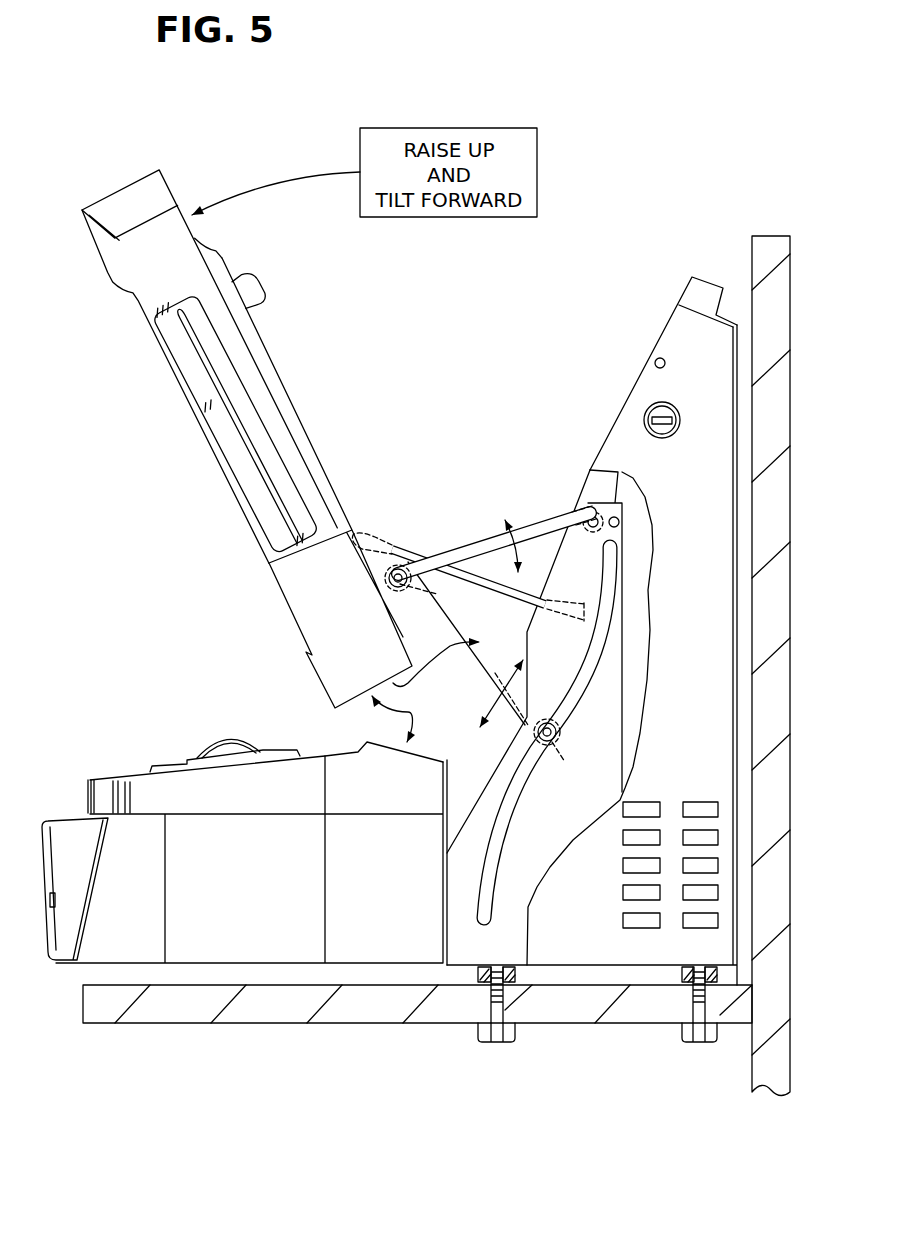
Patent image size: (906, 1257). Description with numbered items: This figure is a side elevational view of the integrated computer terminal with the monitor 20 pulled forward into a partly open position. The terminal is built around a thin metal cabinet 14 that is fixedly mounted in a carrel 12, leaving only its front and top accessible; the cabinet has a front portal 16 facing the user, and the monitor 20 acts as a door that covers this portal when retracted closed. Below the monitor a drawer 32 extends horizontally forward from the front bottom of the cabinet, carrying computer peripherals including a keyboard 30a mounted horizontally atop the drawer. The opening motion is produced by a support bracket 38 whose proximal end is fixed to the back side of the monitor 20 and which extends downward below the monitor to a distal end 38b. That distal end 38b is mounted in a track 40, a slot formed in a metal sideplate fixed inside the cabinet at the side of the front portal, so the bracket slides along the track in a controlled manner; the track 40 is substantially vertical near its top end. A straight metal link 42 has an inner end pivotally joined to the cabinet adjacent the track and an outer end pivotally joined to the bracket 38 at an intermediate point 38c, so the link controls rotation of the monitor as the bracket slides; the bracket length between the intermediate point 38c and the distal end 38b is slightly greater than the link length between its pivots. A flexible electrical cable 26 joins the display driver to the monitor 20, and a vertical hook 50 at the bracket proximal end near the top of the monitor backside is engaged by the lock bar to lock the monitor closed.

The carrel 12 is at (770, 234).
The cabinet 14 is at (709, 571).
The front portal 16 is at (628, 402).
The monitor 20 is at (122, 188).
The electrical cables 26 is at (503, 592).
The keyboard 30a is at (110, 775).
The drawer 32 is at (254, 911).
The support bracket 38 is at (328, 432).
The bracket distal end 38b is at (553, 744).
The intermediate point 38c is at (377, 520).
The track 40 is at (500, 830).
The link 42 is at (543, 518).
The vertical hook 50 is at (268, 300).